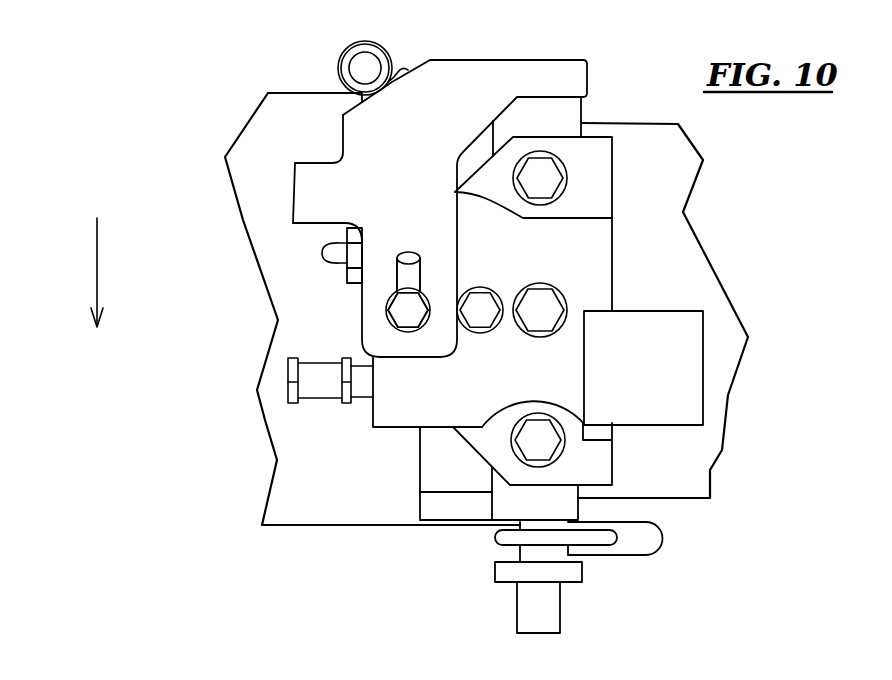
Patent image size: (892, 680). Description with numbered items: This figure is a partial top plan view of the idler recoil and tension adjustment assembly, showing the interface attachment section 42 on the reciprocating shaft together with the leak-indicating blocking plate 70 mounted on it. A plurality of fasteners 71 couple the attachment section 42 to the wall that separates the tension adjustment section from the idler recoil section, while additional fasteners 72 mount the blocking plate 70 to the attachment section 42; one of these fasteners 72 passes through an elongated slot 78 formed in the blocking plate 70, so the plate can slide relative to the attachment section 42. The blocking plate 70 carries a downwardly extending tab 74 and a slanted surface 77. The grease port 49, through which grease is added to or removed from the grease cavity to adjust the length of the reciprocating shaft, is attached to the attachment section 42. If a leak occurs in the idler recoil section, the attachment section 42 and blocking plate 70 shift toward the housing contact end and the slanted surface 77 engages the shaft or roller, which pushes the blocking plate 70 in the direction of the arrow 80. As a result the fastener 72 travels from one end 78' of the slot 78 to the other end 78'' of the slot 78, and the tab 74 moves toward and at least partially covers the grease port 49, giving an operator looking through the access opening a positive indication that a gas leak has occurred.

The attachment section 42 is at (620, 151).
The grease port 49 is at (330, 253).
The blocking plate 70 is at (517, 58).
The fasteners 71 is at (542, 440).
The fasteners 72 is at (480, 316).
The tab 74 is at (292, 186).
The slanted surface 77 is at (400, 73).
The elongated slot 78 is at (409, 261).
The end of the slot 78' is at (384, 213).
The other end of the slot 78'' is at (428, 317).
The arrow 80 is at (97, 275).